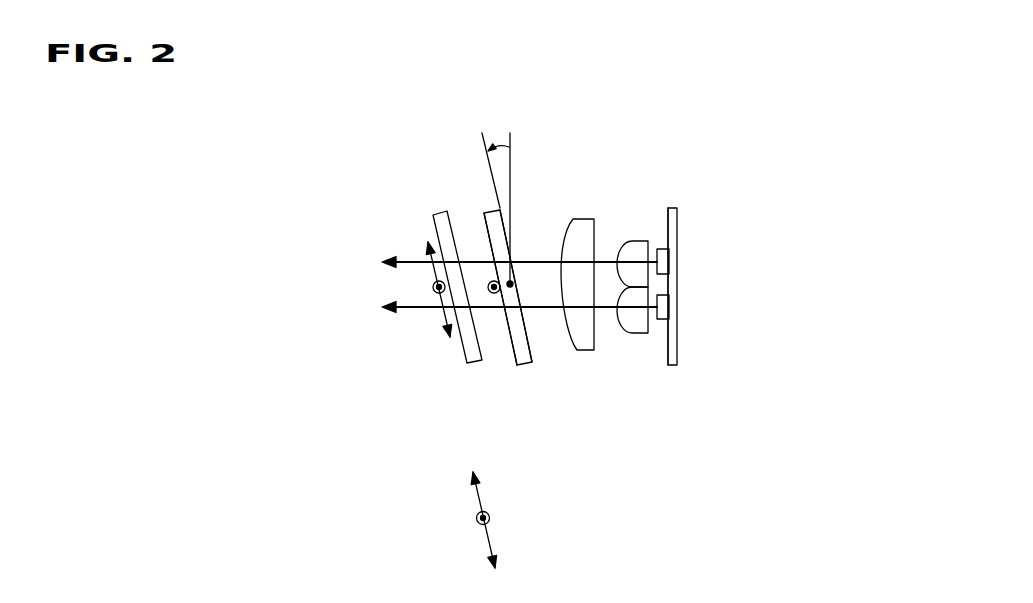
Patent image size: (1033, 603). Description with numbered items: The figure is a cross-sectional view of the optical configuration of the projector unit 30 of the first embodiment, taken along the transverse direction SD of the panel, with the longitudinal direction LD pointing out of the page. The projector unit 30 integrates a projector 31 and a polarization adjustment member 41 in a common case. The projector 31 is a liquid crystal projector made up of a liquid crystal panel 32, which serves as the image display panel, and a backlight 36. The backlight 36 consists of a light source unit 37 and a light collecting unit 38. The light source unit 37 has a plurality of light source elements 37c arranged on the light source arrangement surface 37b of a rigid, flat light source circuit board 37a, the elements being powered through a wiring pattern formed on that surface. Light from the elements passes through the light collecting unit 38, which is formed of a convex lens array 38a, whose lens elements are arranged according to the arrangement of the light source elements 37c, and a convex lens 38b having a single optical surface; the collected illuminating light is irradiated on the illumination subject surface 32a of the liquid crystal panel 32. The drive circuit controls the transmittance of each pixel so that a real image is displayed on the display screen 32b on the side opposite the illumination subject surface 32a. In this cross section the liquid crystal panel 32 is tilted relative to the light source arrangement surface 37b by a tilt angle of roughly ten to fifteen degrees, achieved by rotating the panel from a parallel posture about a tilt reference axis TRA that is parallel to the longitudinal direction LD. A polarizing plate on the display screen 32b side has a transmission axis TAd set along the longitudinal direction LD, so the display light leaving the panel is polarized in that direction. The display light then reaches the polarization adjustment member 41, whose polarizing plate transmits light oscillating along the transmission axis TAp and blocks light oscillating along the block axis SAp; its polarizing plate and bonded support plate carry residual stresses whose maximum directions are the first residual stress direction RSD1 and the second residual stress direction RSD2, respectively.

The projector unit 30 is at (390, 163).
The projector 31 is at (612, 63).
The liquid crystal panel 32 is at (496, 210).
The illumination subject surface 32a is at (539, 337).
The display screen 32b is at (513, 343).
The backlight 36 is at (598, 130).
The light source unit 37 is at (675, 365).
The light source circuit board 37a is at (680, 223).
The light source arrangement surface 37b is at (660, 224).
The light source elements 37c is at (669, 260).
The light collecting unit 38 is at (653, 408).
The convex lens array 38a is at (638, 333).
The convex lens 38b is at (580, 350).
The polarization adjustment member 41 is at (439, 213).
The tilt reference axis TRA is at (512, 283).
The transmission axis TAp is at (436, 293).
The transmission axis TAd is at (480, 343).
The first residual stress direction RSD1 is at (425, 285).
The second residual stress direction RSD2 is at (425, 285).
The block axis SAp is at (433, 283).
The transverse direction SD is at (478, 494).
The longitudinal direction LD is at (490, 518).